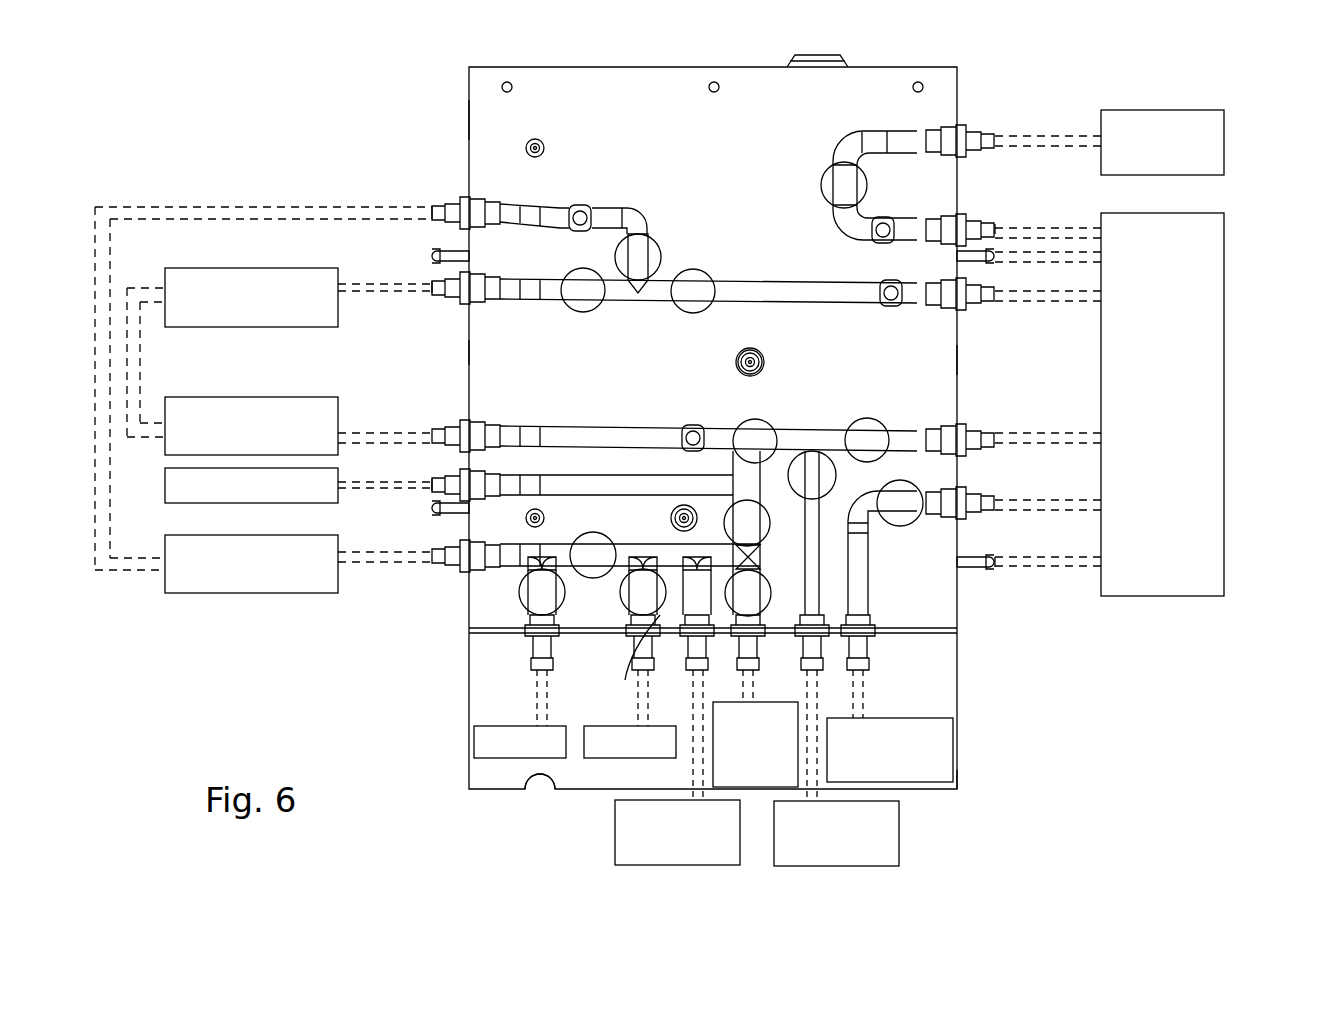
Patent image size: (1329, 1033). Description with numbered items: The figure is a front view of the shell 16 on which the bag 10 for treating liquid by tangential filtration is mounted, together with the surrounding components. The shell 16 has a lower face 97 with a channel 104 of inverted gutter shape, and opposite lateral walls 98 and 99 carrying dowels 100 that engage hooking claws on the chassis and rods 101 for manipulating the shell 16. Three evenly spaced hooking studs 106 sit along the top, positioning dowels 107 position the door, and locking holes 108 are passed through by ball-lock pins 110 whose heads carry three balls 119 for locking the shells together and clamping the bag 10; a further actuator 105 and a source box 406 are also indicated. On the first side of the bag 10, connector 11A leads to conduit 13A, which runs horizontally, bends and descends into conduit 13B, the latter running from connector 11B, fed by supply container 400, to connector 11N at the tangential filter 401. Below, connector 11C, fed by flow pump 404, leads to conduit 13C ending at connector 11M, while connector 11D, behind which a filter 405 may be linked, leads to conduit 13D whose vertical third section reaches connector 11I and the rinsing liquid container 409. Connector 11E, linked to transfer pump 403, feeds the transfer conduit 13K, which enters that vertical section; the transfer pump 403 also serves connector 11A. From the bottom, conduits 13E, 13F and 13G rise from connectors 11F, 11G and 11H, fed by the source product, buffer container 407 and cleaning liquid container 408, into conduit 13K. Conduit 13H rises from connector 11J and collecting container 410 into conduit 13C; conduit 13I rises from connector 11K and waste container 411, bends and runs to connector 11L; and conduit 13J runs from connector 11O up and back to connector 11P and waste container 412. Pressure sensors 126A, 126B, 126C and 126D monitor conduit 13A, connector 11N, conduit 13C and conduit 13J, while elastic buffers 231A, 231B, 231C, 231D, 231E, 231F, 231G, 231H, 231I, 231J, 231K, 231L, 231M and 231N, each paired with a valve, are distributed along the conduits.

The bag 10 is at (481, 118).
The shell 16 is at (652, 67).
The lower face 97 is at (940, 790).
The lateral wall 98 is at (957, 360).
The lateral wall 99 is at (469, 353).
The dowel 100 is at (432, 258).
The rod 101 is at (445, 228).
The channel 104 is at (541, 776).
The valve actuator 105 is at (680, 507).
The hooking stud 106 is at (512, 90).
The positioning dowel 107 is at (543, 150).
The locking hole 108 is at (757, 352).
The ball-lock pin 110 is at (738, 364).
The ball 119 is at (738, 352).
The connector 11A is at (447, 198).
The connector 11B is at (445, 300).
The connector 11C is at (445, 425).
The connector 11D is at (445, 477).
The connector 11E is at (445, 552).
The connector 11F is at (535, 660).
The connector 11G is at (645, 660).
The connector 11H is at (700, 662).
The connector 11I is at (750, 662).
The connector 11J is at (815, 655).
The connector 11K is at (868, 660).
The connector 11L is at (990, 498).
The connector 11M is at (980, 306).
The connector 11N is at (988, 432).
The connector 11O is at (985, 225).
The connector 11P is at (995, 135).
The conduit 13A is at (550, 207).
The conduit 13B is at (808, 288).
The conduit 13C is at (535, 428).
The conduit 13D is at (555, 485).
The conduit 13E is at (532, 598).
The conduit 13F is at (640, 600).
The conduit 13G is at (690, 600).
The conduit 13H is at (858, 560).
The conduit 13I is at (812, 548).
The conduit 13J is at (843, 155).
The conduit 13K is at (505, 548).
The pressure sensor 126A is at (590, 206).
The pressure sensor 126B is at (890, 307).
The pressure sensor 126C is at (688, 426).
The pressure sensor 126D is at (875, 246).
The elastic buffer 231A is at (662, 255).
The buffer 231B is at (583, 312).
The elastic buffer 231C is at (708, 275).
The elastic buffer 231D is at (770, 425).
The elastic buffer 231E is at (880, 420).
The elastic buffer 231F is at (833, 492).
The elastic buffer 231G is at (768, 532).
The elastic buffer 231H is at (593, 578).
The elastic buffer 231I is at (530, 598).
The elastic buffer 231J is at (625, 582).
The elastic buffer 231K is at (616, 656).
The elastic buffer 231L is at (760, 635).
The elastic buffer 231M is at (915, 518).
The elastic buffer 231N is at (826, 188).
The supply container 400 is at (330, 322).
The tangential filter 401 is at (1224, 238).
The transfer pump 403 is at (185, 592).
The flow pump 404 is at (335, 400).
The filter 405 is at (172, 500).
The source 406 is at (474, 742).
The container of buffer product 407 is at (590, 760).
The container for cleaning liquid 408 is at (615, 858).
The container for rinsing liquid 409 is at (770, 788).
The collecting container 410 is at (899, 858).
The waste container 411 is at (953, 750).
The waste container 412 is at (1224, 138).